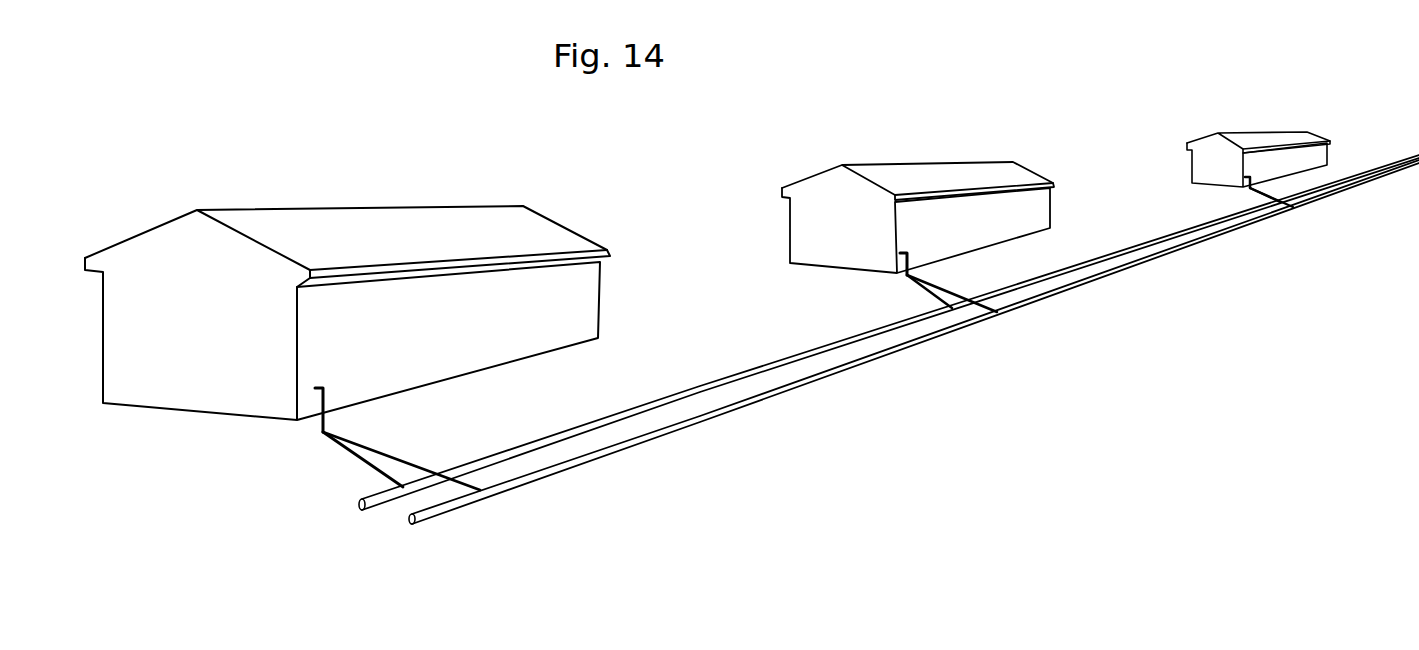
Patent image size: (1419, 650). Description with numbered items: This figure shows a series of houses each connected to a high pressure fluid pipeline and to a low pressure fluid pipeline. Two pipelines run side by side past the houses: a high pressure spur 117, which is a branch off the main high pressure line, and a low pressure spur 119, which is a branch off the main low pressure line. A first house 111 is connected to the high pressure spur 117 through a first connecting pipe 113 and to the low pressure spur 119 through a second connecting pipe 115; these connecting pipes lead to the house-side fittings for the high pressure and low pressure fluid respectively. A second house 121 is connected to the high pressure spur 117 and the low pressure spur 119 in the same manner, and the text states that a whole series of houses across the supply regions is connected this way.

The first house 111 is at (323, 209).
The first connecting pipe 113 is at (357, 457).
The second connecting pipe 115 is at (400, 458).
The high pressure spur 117 is at (815, 352).
The low pressure spur 119 is at (884, 356).
The second house 121 is at (952, 162).